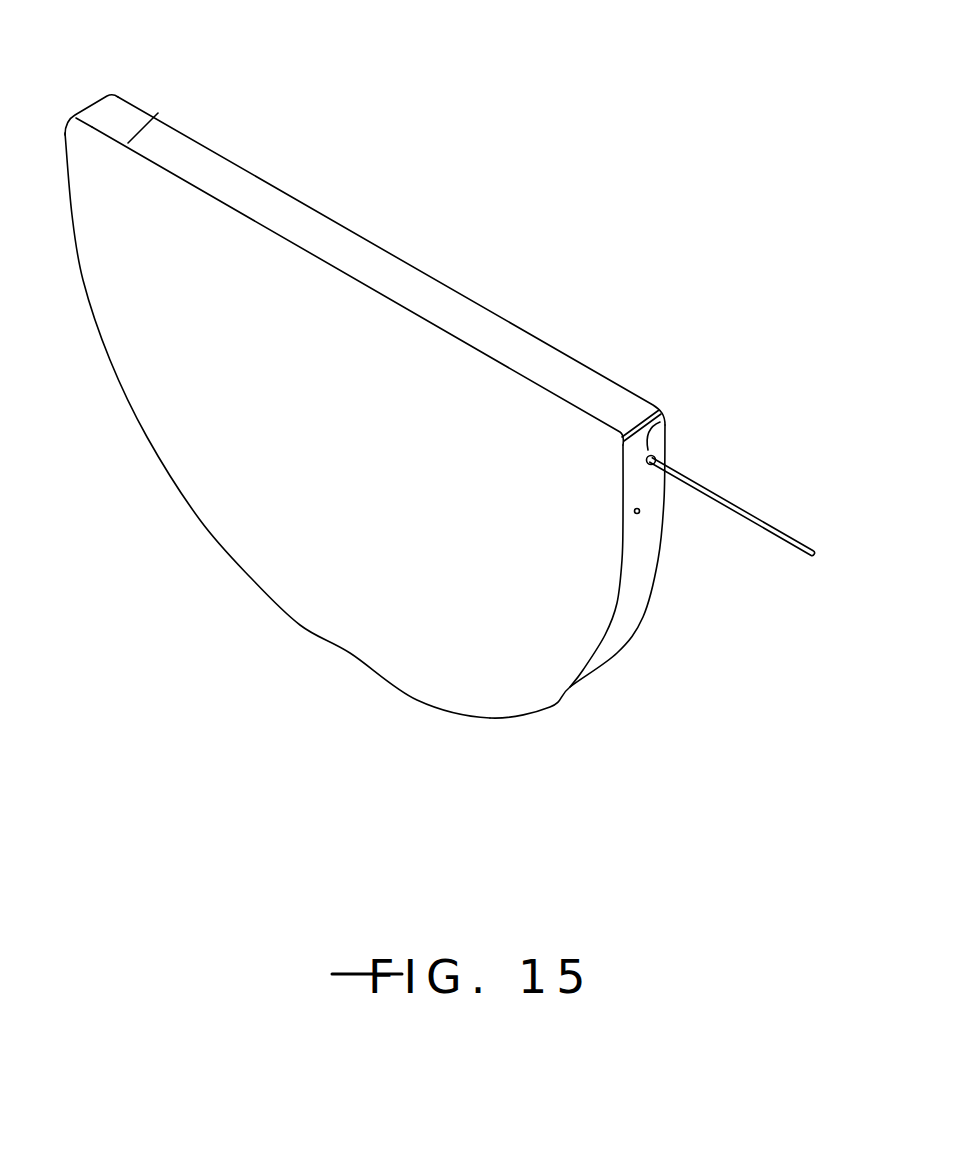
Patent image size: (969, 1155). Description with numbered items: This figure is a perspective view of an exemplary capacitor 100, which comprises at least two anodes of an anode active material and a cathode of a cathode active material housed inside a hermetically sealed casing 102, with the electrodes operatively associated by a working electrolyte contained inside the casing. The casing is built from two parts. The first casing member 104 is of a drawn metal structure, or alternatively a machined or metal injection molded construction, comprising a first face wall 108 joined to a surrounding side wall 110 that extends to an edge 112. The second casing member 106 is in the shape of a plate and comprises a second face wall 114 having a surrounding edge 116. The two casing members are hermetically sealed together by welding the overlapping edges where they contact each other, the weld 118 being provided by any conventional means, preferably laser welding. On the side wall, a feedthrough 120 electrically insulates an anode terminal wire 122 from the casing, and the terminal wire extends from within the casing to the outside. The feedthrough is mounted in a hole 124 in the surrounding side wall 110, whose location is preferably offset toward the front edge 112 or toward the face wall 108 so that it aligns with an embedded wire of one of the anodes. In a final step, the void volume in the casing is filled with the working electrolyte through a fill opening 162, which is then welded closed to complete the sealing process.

The capacitor 100 is at (412, 202).
The casing 102 is at (80, 96).
The first casing member 104 is at (503, 313).
The second casing member 106 is at (147, 437).
The first face wall 108 is at (255, 172).
The surrounding side wall 110 is at (172, 150).
The edge 112 is at (158, 113).
The second face wall 114 is at (320, 608).
The surrounding edge 116 is at (208, 198).
The weld 118 is at (305, 258).
The feedthrough 120 is at (672, 455).
The anode terminal wire 122 is at (778, 530).
The hole 124 is at (660, 422).
The fill opening 162 is at (640, 511).